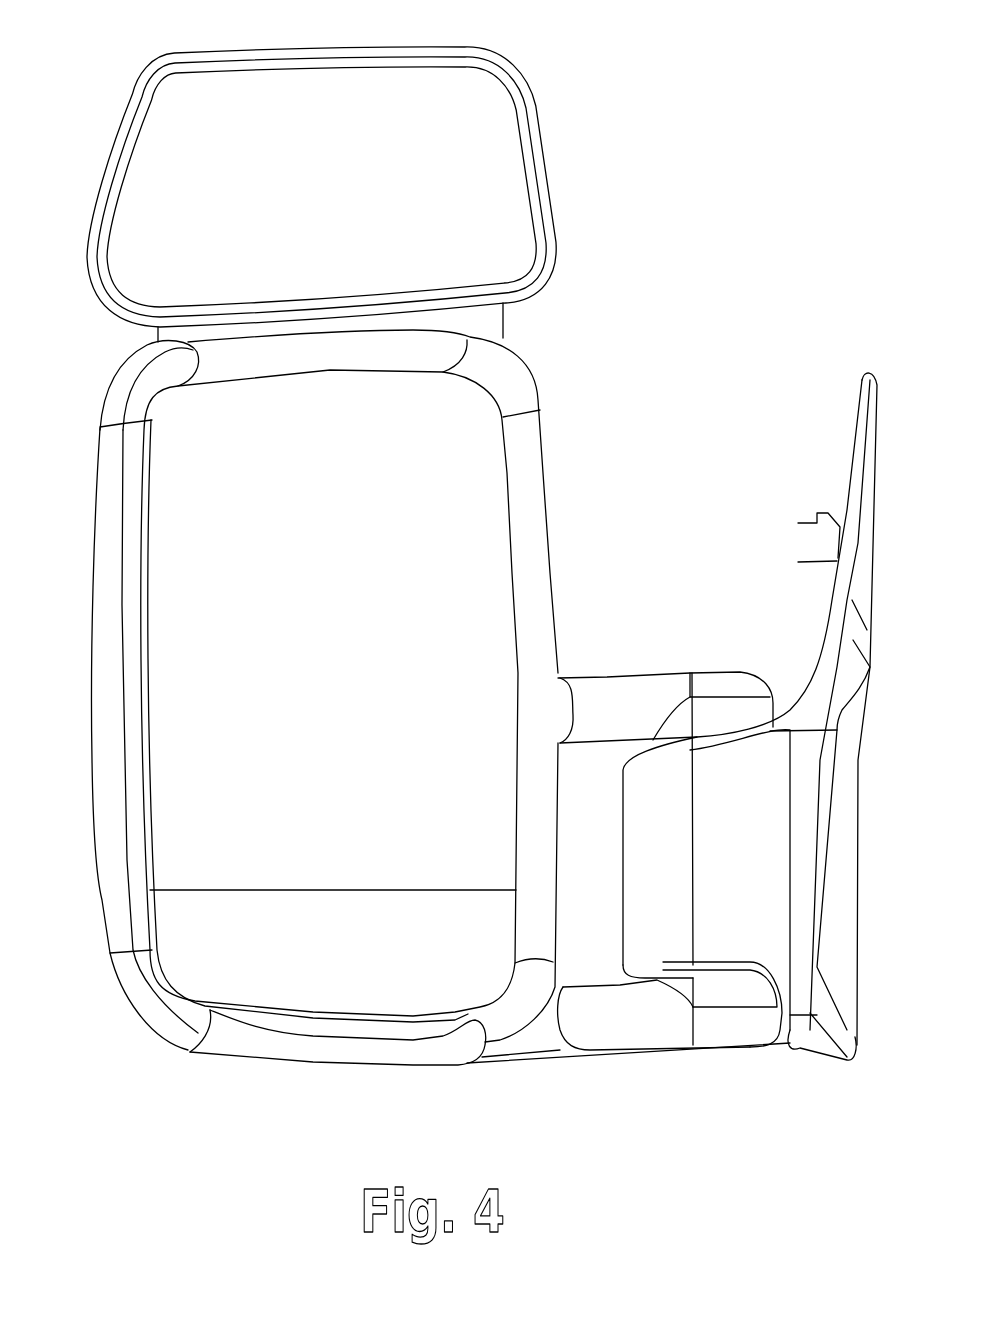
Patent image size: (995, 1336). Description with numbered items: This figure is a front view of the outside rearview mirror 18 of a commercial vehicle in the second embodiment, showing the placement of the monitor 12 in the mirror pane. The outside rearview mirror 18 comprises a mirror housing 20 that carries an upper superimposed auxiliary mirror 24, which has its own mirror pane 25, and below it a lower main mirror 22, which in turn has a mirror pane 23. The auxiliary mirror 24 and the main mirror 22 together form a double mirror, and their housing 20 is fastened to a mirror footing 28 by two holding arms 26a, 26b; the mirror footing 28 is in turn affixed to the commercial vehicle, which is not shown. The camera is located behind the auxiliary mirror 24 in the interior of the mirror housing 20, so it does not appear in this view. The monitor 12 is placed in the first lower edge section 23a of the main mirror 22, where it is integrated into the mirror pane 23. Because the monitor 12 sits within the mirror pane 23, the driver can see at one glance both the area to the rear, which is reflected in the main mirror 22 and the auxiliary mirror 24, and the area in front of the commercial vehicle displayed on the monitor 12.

The monitor 12 is at (346, 964).
The outside rearview mirror 18 is at (479, 582).
The mirror housing 20 is at (525, 387).
The main mirror 22 is at (346, 529).
The mirror pane 23 is at (487, 547).
The first lower edge section 23a is at (172, 915).
The auxiliary mirror 24 is at (346, 194).
The mirror pane 25 is at (510, 177).
The holding arm 26a is at (602, 687).
The holding arm 26b is at (657, 1040).
The mirror footing 28 is at (853, 500).